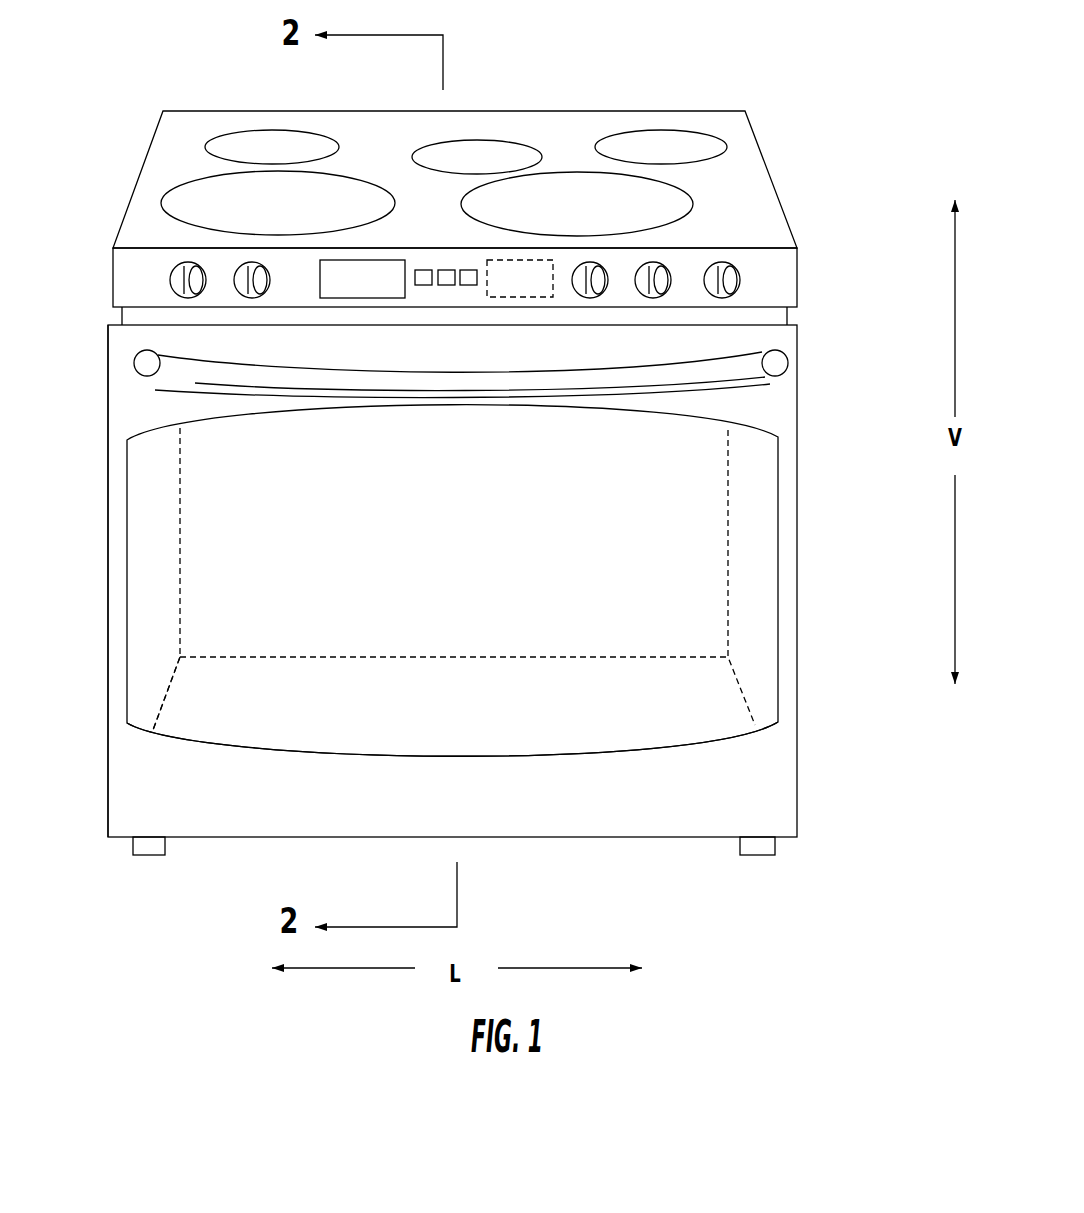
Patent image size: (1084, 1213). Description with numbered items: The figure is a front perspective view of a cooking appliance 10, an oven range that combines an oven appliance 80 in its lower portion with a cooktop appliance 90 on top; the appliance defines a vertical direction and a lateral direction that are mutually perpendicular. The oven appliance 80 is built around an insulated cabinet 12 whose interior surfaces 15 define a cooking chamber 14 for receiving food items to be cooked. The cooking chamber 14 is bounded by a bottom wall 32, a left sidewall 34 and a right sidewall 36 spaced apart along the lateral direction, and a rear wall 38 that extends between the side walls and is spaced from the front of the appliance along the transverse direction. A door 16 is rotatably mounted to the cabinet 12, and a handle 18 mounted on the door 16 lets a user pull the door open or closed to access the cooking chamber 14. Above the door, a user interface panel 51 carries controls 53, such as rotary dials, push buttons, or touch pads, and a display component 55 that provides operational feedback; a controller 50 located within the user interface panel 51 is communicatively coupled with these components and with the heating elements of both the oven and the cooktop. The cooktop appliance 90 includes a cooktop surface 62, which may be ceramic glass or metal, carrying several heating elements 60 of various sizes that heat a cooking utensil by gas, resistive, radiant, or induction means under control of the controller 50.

The cooking appliance 10 is at (474, 456).
The insulated cabinet 12 is at (137, 315).
The cooking chamber 14 is at (475, 670).
The interior surfaces 15 is at (213, 698).
The door 16 is at (473, 497).
The handle 18 is at (152, 390).
The bottom wall 32 is at (570, 740).
The left sidewall 34 is at (153, 553).
The right sidewall 36 is at (747, 563).
The rear wall 38 is at (658, 483).
The controller 50 is at (461, 272).
The user interface panel 51 is at (448, 290).
The controls 53 is at (724, 262).
The display component 55 is at (393, 260).
The heating elements 60 is at (312, 172).
The cooktop surface 62 is at (738, 172).
The oven appliance 80 is at (106, 668).
The cooktop appliance 90 is at (448, 133).